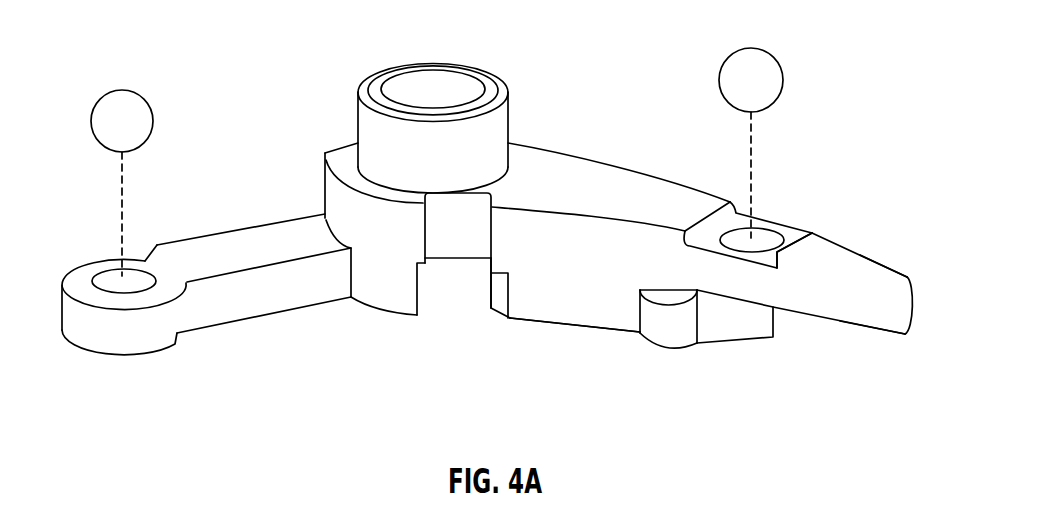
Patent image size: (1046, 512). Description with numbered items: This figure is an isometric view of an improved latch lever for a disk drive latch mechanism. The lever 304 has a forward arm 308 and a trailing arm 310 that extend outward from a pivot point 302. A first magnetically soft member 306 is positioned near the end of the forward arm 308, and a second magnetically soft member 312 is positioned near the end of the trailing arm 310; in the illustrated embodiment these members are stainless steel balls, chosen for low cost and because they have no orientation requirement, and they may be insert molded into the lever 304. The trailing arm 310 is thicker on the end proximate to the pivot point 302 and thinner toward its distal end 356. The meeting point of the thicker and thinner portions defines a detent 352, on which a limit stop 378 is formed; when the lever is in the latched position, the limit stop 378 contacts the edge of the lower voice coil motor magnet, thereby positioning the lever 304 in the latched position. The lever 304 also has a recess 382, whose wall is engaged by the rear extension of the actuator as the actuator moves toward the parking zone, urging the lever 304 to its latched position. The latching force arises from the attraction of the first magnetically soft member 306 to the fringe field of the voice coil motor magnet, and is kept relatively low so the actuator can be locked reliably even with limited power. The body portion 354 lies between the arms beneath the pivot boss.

The pivot point 302 is at (438, 78).
The lever 304 is at (282, 160).
The first magnetically soft member 306 is at (123, 102).
The forward arm 308 is at (113, 328).
The trailing arm 310 is at (895, 328).
The second magnetically soft member 312 is at (755, 67).
The detent 352 is at (755, 330).
The body portion 354 is at (577, 298).
The distal end 356 is at (830, 280).
The limit stop 378 is at (663, 330).
The recess 382 is at (453, 237).